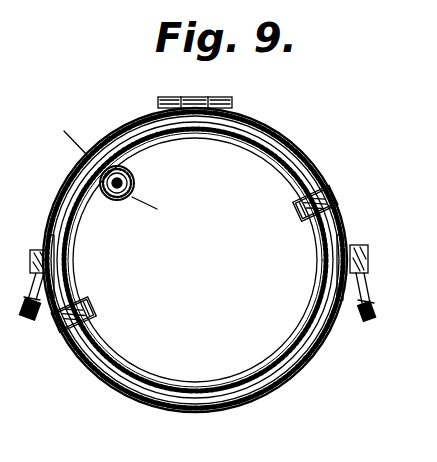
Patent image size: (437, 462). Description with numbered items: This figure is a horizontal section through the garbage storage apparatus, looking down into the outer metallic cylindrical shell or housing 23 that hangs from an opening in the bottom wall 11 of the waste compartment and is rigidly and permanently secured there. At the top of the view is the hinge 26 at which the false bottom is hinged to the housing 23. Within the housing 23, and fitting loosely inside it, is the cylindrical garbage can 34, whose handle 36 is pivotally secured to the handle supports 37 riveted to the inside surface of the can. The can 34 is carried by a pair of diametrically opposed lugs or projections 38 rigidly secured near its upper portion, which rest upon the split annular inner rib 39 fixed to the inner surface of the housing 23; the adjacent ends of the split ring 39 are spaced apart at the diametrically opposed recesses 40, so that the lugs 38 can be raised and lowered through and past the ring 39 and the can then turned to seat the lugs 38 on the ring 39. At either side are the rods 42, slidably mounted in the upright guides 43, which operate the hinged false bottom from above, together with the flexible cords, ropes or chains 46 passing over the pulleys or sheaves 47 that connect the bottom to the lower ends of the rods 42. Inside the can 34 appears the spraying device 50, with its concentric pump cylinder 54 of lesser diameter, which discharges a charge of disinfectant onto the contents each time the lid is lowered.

The bottom wall 11 is at (66, 128).
The outer metallic cylindrical shell or housing 23 is at (218, 410).
The hinge 26 is at (217, 98).
The cylindrical garbage can 34 is at (262, 152).
The handle 36 is at (220, 378).
The handle supports 37 is at (300, 195).
The lugs or projections 38 is at (322, 190).
The split annular inner rib 39 is at (62, 222).
The recesses 40 is at (55, 259).
The rods 42 is at (35, 300).
The upright guides 43 is at (43, 320).
The flexible cords, ropes or chains 46 is at (35, 283).
The pulleys or sheaves 47 is at (33, 253).
The spraying device 50 is at (128, 173).
The concentric pump cylinder 54 is at (133, 182).